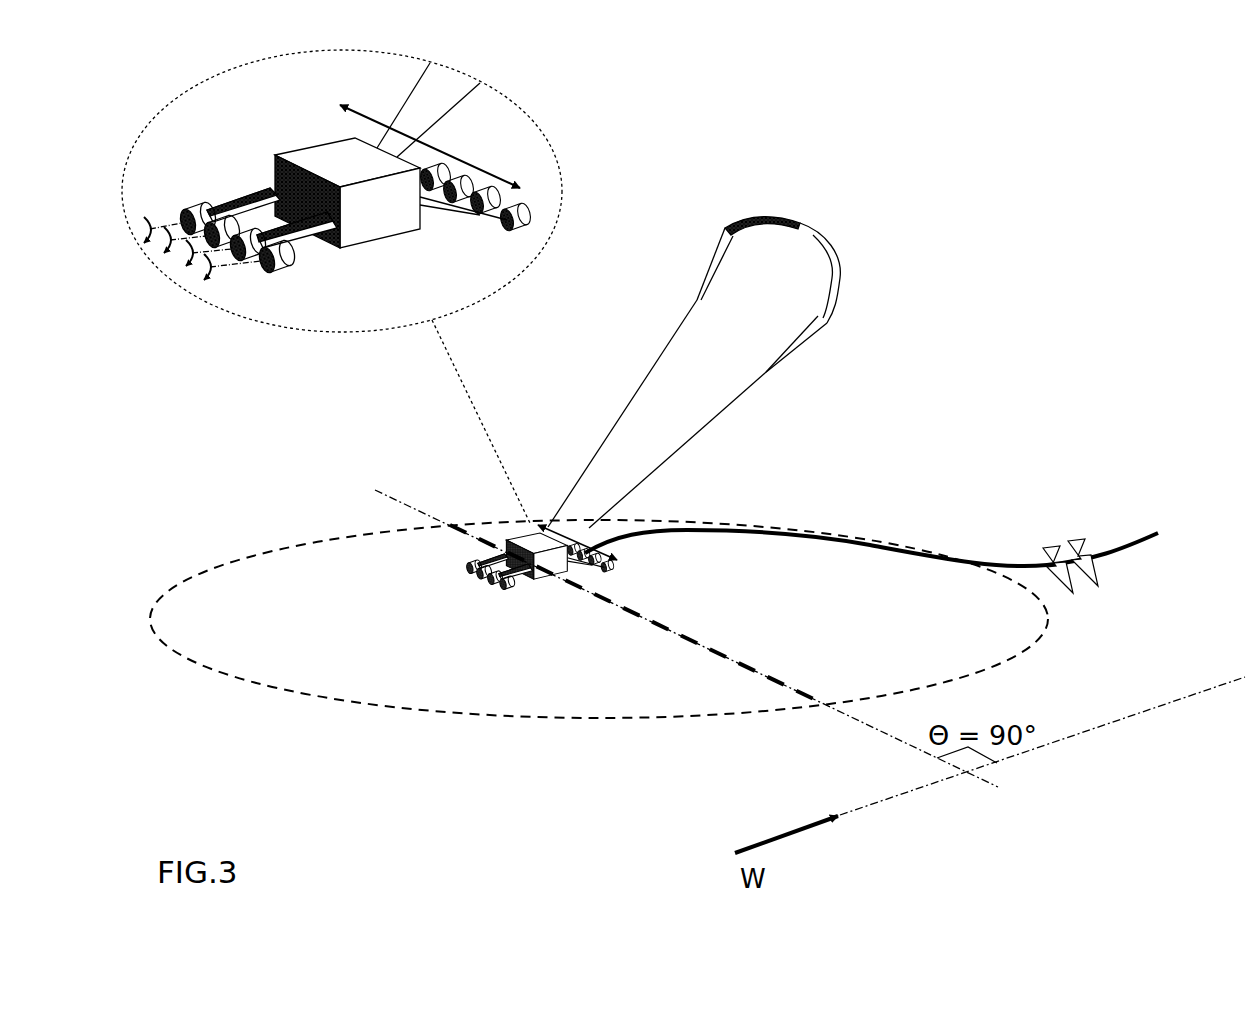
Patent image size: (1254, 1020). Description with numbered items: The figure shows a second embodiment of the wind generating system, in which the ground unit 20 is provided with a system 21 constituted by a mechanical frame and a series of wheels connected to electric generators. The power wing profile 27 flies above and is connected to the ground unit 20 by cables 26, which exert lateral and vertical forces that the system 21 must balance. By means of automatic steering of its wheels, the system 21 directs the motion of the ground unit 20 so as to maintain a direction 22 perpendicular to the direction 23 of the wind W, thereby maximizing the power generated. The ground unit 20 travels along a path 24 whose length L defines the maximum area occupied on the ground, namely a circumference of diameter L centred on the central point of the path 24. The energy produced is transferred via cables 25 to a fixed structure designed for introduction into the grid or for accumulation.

The ground unit 20 is at (370, 176).
The system constituted by a mechanical frame and a series of wheels 21 is at (246, 250).
The direction of motion of the ground unit 22 is at (686, 638).
The direction of the wind 23 is at (1042, 746).
The path 24 is at (635, 613).
The cables 25 is at (871, 561).
The cables 26 is at (656, 414).
The power wing profile 27 is at (774, 286).